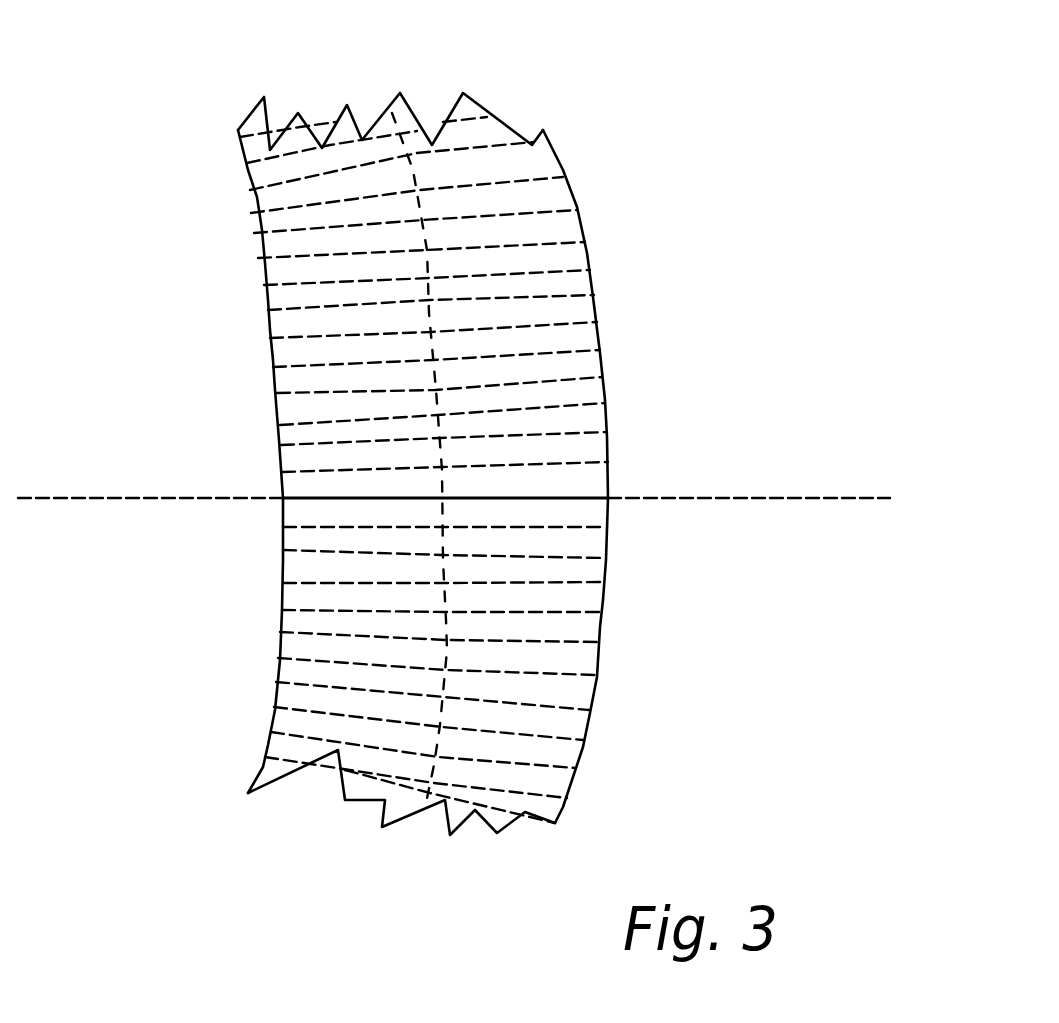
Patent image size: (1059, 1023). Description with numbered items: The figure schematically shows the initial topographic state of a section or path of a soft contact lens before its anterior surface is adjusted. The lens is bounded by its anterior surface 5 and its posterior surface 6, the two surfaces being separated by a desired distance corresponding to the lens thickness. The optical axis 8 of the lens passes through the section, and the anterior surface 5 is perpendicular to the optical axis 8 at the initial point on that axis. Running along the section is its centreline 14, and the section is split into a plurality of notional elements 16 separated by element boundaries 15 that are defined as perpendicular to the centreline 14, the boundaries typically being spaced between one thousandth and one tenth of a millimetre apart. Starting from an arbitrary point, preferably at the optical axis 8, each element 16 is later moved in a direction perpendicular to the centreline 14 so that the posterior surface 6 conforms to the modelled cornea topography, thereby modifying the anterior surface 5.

The anterior surface of the lens 5 is at (634, 476).
The posterior surface 6 is at (186, 461).
The optical axis 8 is at (454, 426).
The centreline 14 is at (405, 148).
The element boundaries 15 is at (344, 470).
The notional elements 16 is at (520, 401).